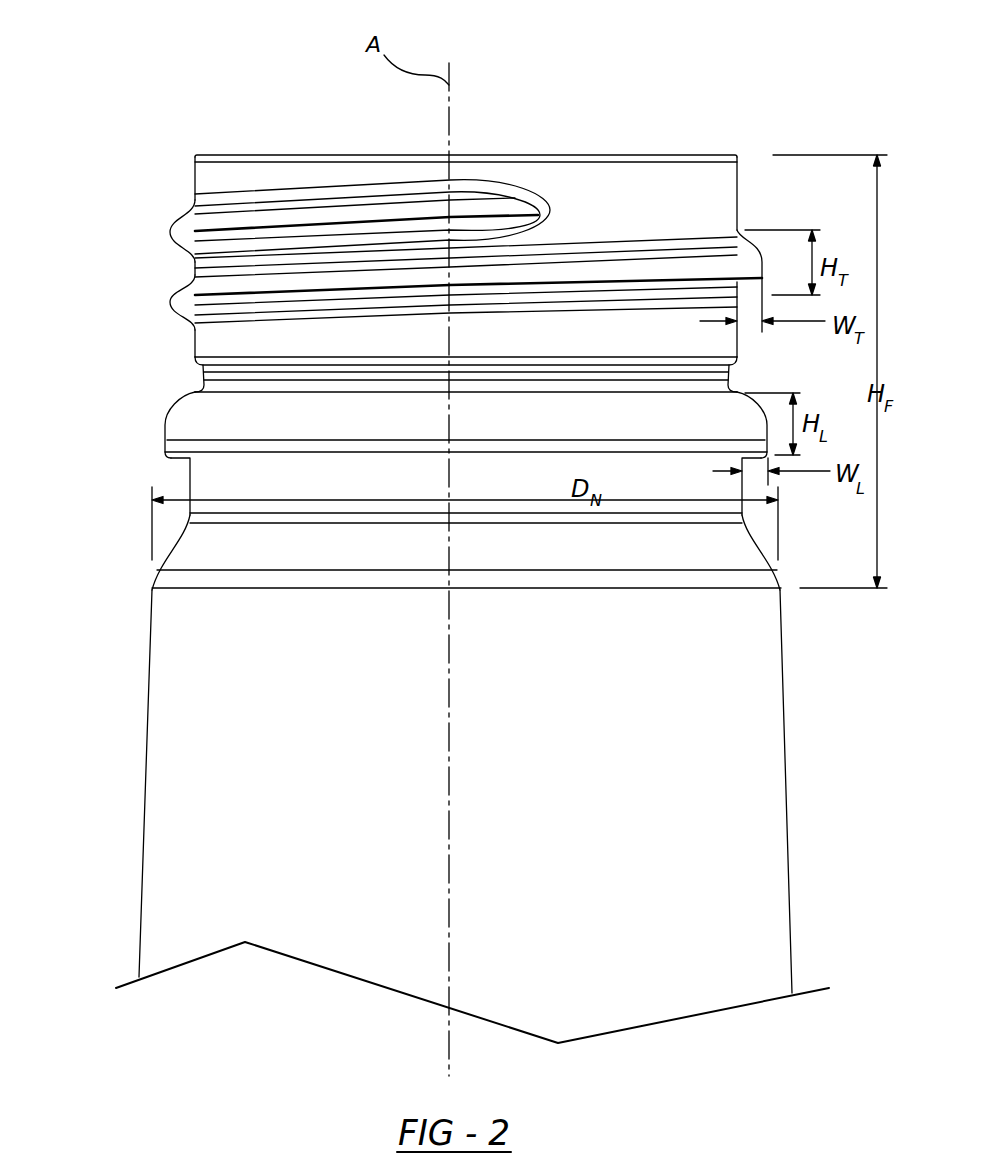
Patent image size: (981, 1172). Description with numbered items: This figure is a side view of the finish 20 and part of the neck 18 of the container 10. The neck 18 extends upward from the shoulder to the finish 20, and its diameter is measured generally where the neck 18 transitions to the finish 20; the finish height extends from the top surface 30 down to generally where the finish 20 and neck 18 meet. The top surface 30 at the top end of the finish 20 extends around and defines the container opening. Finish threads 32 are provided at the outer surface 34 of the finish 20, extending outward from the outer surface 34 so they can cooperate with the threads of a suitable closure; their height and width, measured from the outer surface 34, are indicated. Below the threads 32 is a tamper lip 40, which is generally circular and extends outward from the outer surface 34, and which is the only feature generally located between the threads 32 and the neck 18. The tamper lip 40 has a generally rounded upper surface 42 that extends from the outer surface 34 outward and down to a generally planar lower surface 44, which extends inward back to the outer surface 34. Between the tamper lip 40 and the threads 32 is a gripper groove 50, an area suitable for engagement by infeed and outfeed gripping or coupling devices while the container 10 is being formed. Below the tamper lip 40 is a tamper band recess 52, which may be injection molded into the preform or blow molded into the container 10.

The container 10 is at (107, 88).
The neck 18 is at (205, 765).
The finish 20 is at (195, 175).
The top surface 30 is at (206, 155).
The finish threads 32 is at (170, 295).
The outer surface 34 is at (737, 184).
The tamper lip 40 is at (165, 448).
The rounded upper surface 42 is at (195, 393).
The lower surface 44 is at (173, 462).
The gripper groove 50 is at (203, 378).
The tamper band recess 52 is at (162, 476).